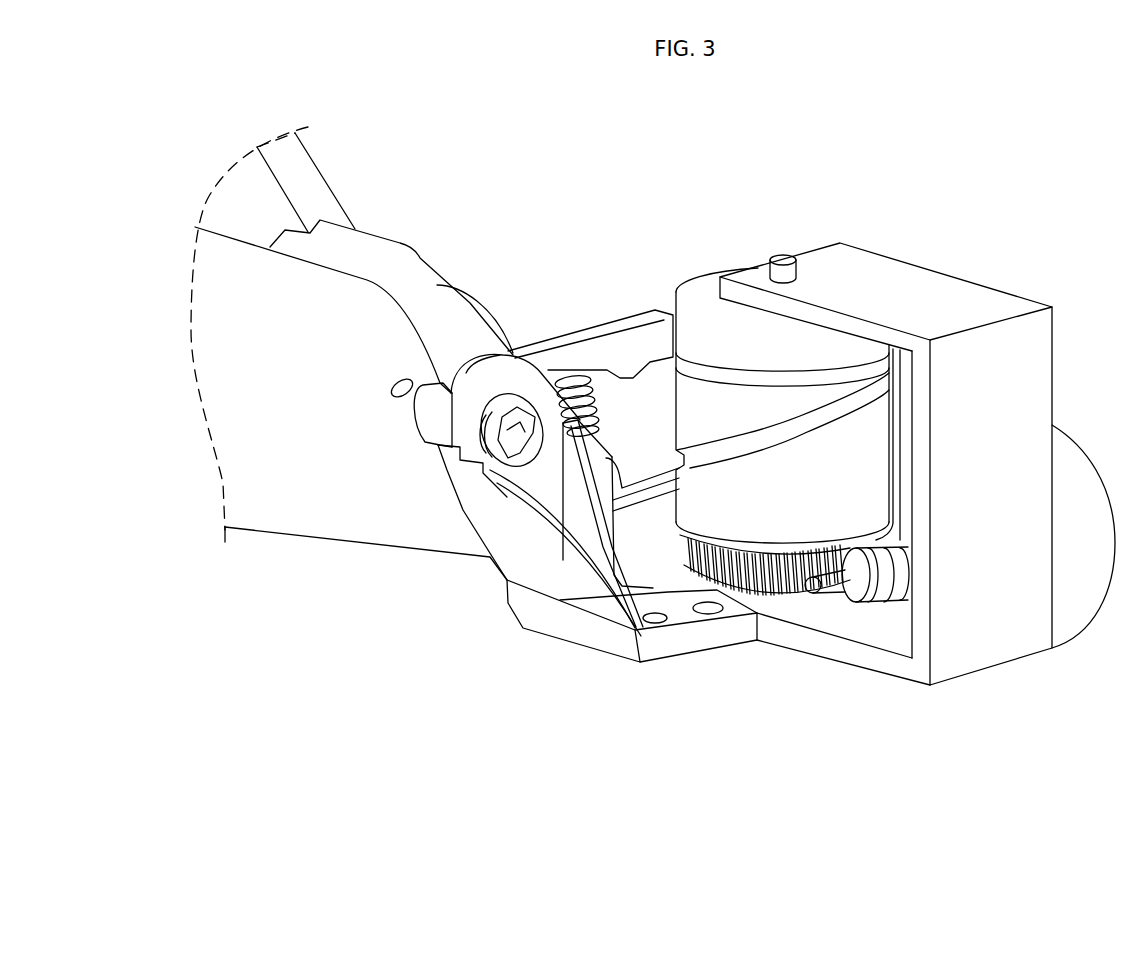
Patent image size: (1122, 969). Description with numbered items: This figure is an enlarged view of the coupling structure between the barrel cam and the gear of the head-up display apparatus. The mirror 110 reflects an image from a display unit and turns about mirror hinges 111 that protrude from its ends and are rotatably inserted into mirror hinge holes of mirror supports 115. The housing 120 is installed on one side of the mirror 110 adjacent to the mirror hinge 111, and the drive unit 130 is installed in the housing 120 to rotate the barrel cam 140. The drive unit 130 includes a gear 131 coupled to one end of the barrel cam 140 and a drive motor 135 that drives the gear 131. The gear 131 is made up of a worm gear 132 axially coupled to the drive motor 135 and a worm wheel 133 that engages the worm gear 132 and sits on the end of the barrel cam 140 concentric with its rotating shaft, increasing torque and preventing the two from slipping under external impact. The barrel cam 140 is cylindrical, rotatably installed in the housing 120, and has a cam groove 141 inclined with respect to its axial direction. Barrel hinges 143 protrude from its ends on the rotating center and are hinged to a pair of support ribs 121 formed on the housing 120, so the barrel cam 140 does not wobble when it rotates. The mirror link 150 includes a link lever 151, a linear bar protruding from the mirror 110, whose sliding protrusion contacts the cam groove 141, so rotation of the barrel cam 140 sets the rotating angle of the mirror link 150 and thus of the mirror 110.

The mirror 110 is at (334, 170).
The mirror hinge 111 is at (503, 417).
The mirror support 115 is at (566, 586).
The housing 120 is at (1008, 280).
The support rib 121 is at (927, 283).
The drive unit 130 is at (795, 765).
The gear 131 is at (895, 714).
The worm gear 132 is at (878, 600).
The worm wheel 133 is at (774, 600).
The drive motor 135 is at (1063, 600).
The barrel cam 140 is at (712, 340).
The cam groove 141 is at (816, 365).
The barrel hinge 143 is at (783, 255).
The mirror link 150 is at (625, 305).
The link lever 151 is at (580, 350).